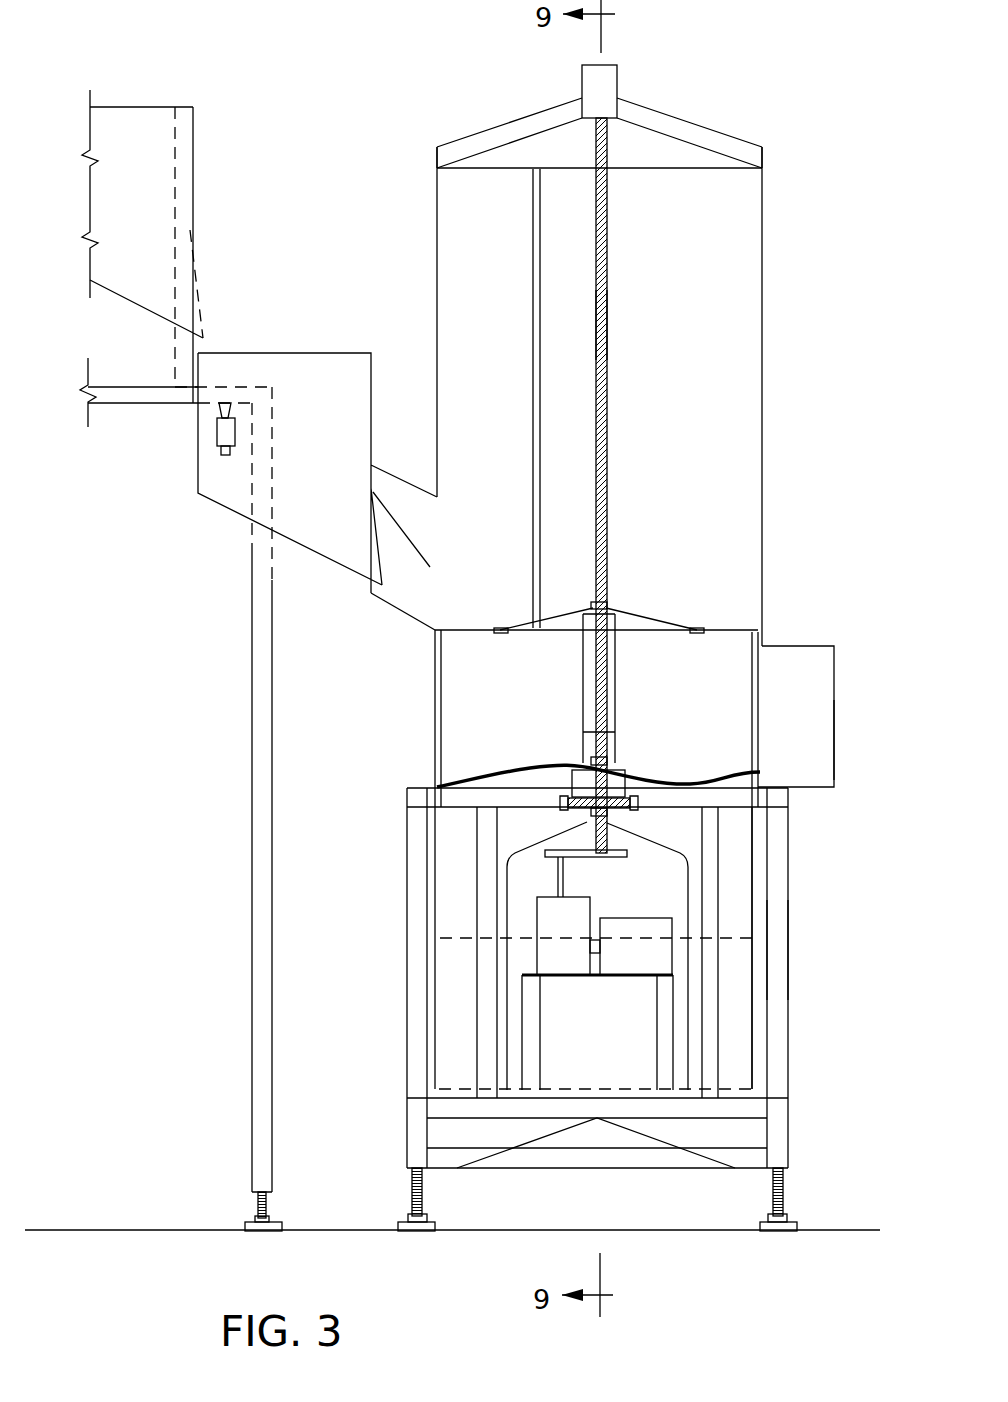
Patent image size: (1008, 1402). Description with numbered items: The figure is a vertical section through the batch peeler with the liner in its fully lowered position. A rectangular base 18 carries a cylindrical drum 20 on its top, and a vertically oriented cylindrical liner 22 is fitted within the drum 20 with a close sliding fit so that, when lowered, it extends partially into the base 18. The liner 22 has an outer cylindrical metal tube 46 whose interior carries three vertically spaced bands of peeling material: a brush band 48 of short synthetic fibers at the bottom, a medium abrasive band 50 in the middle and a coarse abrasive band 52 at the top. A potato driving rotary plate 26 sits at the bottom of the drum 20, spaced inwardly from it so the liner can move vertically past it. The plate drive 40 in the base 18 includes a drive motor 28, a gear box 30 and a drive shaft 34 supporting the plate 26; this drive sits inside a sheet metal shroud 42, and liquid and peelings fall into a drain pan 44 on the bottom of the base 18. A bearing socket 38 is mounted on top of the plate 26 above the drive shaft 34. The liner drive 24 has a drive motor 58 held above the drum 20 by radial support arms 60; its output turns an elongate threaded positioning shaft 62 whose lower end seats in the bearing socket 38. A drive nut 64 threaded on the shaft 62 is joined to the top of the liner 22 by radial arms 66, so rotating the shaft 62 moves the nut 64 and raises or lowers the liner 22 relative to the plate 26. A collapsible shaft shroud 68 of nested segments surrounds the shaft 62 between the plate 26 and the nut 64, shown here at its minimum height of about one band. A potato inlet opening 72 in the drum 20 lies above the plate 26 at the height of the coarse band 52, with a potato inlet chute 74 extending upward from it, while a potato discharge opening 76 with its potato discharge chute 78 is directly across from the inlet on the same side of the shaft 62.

The rectangular base 18 is at (788, 968).
The cylindrical drum 20 is at (763, 310).
The cylindrical liner 22 is at (770, 905).
The liner drive 24 is at (622, 228).
The potato driving rotary plate 26 is at (692, 777).
The drive motor 28 is at (653, 974).
The gear box 30 is at (578, 936).
The drive shaft 34 is at (592, 822).
The bearing socket 38 is at (607, 760).
The plate drive 40 is at (540, 887).
The sheet metal shroud 42 is at (505, 1007).
The drain pan 44 is at (660, 1137).
The outer cylindrical metal tube 46 is at (754, 868).
The brush band 48 is at (760, 1060).
The medium abrasive band 50 is at (752, 832).
The coarse abrasive band 52 is at (754, 674).
The drive motor 58 is at (584, 66).
The radial support arms 60 is at (502, 126).
The threaded positioning shaft 62 is at (607, 330).
The drive nut 64 is at (604, 600).
The radial arms 66 is at (533, 208).
The collapsible shaft shroud 68 is at (628, 675).
The potato inlet opening 72 is at (430, 523).
The potato inlet chute 74 is at (390, 607).
The potato discharge opening 76 is at (763, 711).
The potato discharge chute 78 is at (835, 752).